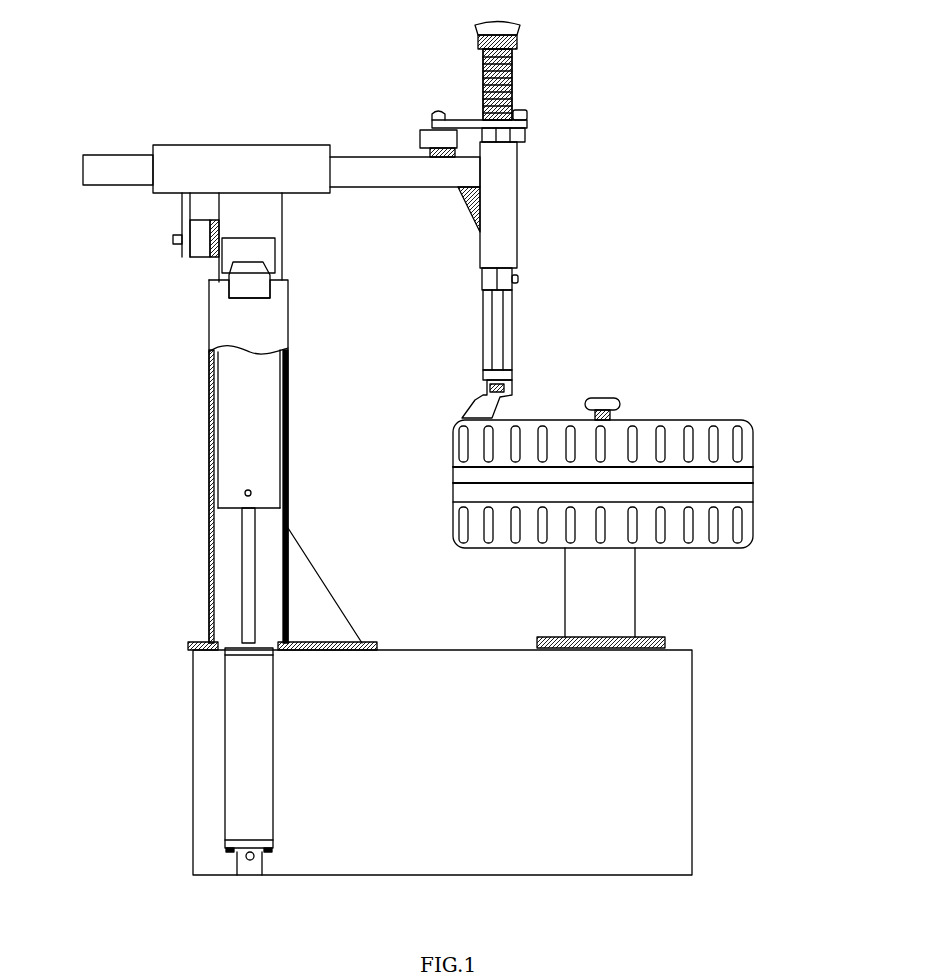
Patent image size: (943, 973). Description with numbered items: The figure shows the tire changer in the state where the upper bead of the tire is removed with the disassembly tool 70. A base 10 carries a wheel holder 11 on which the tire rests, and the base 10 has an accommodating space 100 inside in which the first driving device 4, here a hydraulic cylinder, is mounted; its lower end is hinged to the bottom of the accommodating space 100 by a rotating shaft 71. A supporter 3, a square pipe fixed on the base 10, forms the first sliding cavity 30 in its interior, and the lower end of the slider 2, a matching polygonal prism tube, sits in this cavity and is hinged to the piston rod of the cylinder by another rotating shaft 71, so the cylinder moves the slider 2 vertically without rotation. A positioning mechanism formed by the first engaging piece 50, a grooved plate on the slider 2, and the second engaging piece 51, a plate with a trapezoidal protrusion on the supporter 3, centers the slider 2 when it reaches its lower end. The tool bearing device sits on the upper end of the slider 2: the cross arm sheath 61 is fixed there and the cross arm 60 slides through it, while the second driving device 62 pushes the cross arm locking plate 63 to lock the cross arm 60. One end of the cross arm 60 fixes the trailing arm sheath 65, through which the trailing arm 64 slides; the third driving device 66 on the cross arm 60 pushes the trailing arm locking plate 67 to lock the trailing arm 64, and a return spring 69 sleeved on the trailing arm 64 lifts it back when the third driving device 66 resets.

The slider 2 is at (268, 208).
The supporter 3 is at (288, 445).
The first driving device 4 is at (265, 697).
The base 10 is at (672, 770).
The wheel holder 11 is at (632, 591).
The first sliding cavity 30 is at (272, 523).
The first engaging piece 50 is at (268, 245).
The second engaging piece 51 is at (278, 298).
The cross arm 60 is at (124, 155).
The cross arm sheath 61 is at (225, 160).
The second driving device 62 is at (188, 262).
The cross arm locking plate 63 is at (178, 213).
The trailing arm 64 is at (512, 313).
The trailing arm sheath 65 is at (513, 213).
The third driving device 66 is at (420, 135).
The trailing arm locking plate 67 is at (470, 118).
The return spring 69 is at (510, 55).
The disassembly tool 70 is at (510, 383).
The rotating shaft 71 is at (245, 491).
The accommodating space 100 is at (210, 762).